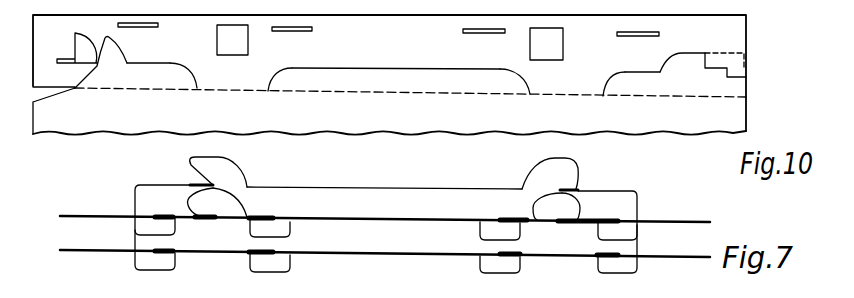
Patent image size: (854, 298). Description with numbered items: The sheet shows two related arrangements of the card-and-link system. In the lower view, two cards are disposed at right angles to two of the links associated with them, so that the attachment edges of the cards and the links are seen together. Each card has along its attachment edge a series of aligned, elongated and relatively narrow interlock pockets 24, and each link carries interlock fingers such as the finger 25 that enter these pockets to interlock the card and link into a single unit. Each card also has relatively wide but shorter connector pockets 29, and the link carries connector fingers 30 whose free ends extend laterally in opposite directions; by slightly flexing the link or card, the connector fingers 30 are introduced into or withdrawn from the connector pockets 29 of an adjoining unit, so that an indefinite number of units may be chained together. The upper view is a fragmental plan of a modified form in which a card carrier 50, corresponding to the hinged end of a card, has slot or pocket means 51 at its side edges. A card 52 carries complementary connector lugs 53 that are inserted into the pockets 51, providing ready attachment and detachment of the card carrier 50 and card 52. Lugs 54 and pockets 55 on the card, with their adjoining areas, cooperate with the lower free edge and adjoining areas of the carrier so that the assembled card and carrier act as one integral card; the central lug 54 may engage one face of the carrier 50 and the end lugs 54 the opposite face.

In FIG. 10, the interlock pockets 24 is at (158, 25).
In FIG. 7, the interlock finger 25 is at (160, 263).
In FIG. 10, the connector pockets 29 is at (248, 44).
In FIG. 7, the connector fingers 30 is at (206, 157).
In FIG. 10, the card carrier 50 is at (746, 42).
In FIG. 10, the pockets 51 is at (78, 56).
In FIG. 10, the card 52 is at (746, 131).
In FIG. 10, the connector lugs 53 is at (113, 48).
In FIG. 10, the lugs 54 is at (170, 71).
In FIG. 10, the pockets 55 is at (248, 83).